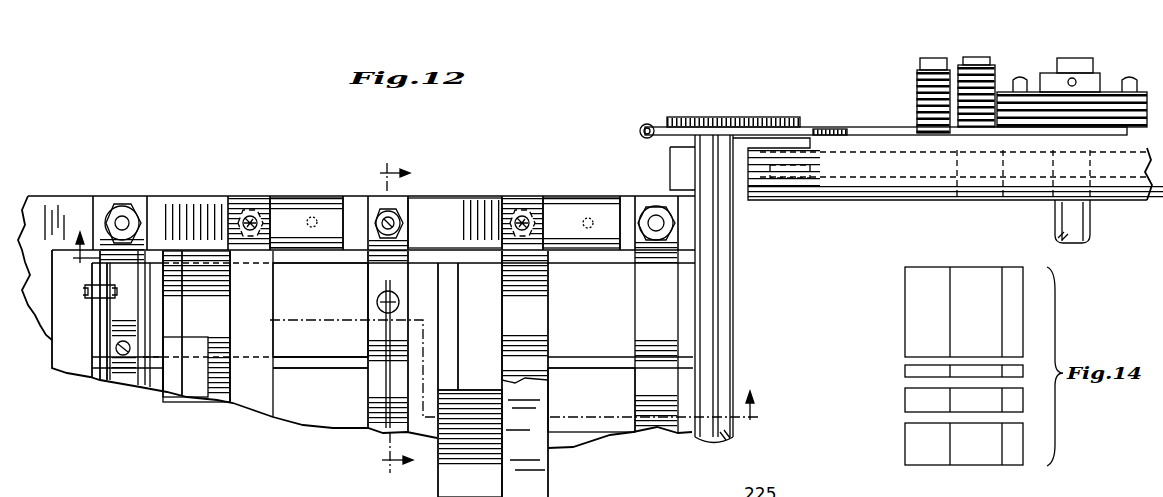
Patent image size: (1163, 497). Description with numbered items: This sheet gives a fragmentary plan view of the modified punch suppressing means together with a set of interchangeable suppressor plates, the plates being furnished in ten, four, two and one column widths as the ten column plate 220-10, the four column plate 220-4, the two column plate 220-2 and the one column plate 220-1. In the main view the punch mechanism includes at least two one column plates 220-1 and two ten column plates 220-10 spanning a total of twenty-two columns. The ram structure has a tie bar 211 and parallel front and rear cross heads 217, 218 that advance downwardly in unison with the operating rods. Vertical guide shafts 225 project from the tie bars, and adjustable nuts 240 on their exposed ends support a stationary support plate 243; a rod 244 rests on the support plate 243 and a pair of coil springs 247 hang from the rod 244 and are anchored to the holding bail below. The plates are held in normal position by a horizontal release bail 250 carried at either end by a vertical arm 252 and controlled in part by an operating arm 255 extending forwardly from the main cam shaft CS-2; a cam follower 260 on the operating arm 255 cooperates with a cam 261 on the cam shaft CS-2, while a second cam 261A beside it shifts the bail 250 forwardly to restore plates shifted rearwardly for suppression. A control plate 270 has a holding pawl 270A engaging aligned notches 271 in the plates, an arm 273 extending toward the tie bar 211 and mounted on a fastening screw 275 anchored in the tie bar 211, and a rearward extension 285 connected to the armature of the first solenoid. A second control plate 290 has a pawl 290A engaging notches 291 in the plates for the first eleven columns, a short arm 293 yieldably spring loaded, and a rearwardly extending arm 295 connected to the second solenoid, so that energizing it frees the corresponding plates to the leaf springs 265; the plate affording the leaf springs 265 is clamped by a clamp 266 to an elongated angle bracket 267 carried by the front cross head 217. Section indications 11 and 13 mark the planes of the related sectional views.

In FIG. 12, the front cross head 217 is at (108, 198).
In FIG. 12, the tie bar 211 is at (163, 208).
In FIG. 12, the short arm 293 is at (227, 218).
In FIG. 12, the fastening screw 275 is at (247, 216).
In FIG. 12, the rearwardly extending arm 295 is at (298, 210).
In FIG. 12, the section line 11 is at (396, 321).
In FIG. 12, the vertical guide shaft 225 is at (398, 215).
In FIG. 12, the adjustable nut 240 is at (399, 231).
In FIG. 12, the notch 271 is at (445, 283).
In FIG. 12, the section line 13 is at (419, 325).
In FIG. 12, the rearward extension 285 is at (577, 207).
In FIG. 12, the release bail 250 is at (715, 302).
In FIG. 12, the vertical arm 252 is at (746, 117).
In FIG. 12, the operating arm 255 is at (822, 128).
In FIG. 12, the cam follower 260 is at (958, 98).
In FIG. 12, the second cam 261A is at (998, 92).
In FIG. 12, the cam 261 is at (1113, 90).
In FIG. 12, the main cam shaft CS-2 is at (1058, 212).
In FIG. 12, the clamp 266 is at (90, 334).
In FIG. 12, the leaf spring 265 is at (98, 380).
In FIG. 12, the angle bracket 267 is at (118, 372).
In FIG. 12, the notch 291 is at (167, 350).
In FIG. 12, the pawl 290A is at (196, 326).
In FIG. 12, the second control plate 290 is at (255, 396).
In FIG. 12, the ten column plate 220-10 is at (573, 453).
In FIG. 14, the ten column plate 220-10 is at (905, 316).
In FIG. 12, the coil spring 247 is at (377, 304).
In FIG. 12, the one column plate 220-1 is at (287, 360).
In FIG. 14, the one column plate 220-1 is at (906, 371).
In FIG. 12, the rod 244 is at (387, 382).
In FIG. 12, the stationary support plate 243 is at (377, 422).
In FIG. 12, the holding pawl 270A is at (470, 443).
In FIG. 12, the arm 273 is at (525, 374).
In FIG. 12, the control plate 270 is at (534, 337).
In FIG. 12, the rear cross head 218 is at (643, 378).
In FIG. 14, the two column plate 220-2 is at (910, 400).
In FIG. 14, the four column plate 220-4 is at (910, 443).